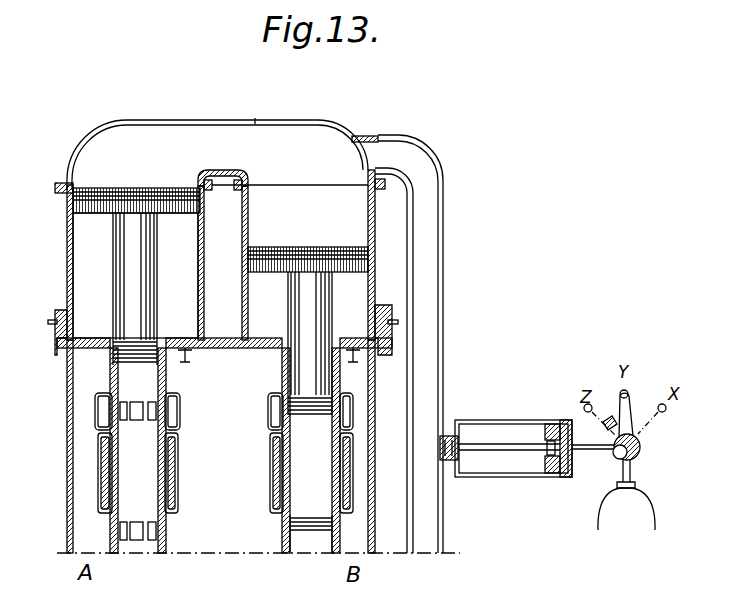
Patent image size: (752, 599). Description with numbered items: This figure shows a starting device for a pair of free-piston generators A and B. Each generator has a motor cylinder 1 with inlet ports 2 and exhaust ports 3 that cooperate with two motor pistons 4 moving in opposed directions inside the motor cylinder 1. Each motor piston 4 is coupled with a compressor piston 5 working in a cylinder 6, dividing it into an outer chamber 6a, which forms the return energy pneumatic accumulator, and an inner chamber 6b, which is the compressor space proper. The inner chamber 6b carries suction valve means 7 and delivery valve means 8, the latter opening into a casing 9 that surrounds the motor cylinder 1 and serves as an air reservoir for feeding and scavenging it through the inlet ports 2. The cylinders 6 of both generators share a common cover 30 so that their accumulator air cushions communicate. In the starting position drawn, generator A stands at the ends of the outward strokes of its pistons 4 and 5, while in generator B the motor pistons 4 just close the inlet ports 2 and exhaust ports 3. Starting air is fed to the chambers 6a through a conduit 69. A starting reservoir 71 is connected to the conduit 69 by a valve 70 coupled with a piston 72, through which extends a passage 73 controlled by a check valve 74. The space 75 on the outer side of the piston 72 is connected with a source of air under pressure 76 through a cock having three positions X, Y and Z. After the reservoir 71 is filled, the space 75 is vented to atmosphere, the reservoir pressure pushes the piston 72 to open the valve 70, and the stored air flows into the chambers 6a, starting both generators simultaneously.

The motor cylinder 1 is at (170, 477).
The inlet ports 2 is at (166, 529).
The exhaust ports 3 is at (165, 415).
The motor pistons 4 is at (122, 272).
The compressor piston 5 is at (84, 191).
The cylinder 6 is at (66, 235).
The outer chamber 6a is at (125, 188).
The inner chamber 6b is at (101, 291).
The suction valve means 7 is at (62, 323).
The delivery valve means 8 is at (185, 362).
The casing 9 is at (70, 404).
The common cover 30 is at (255, 118).
The conduit 69 is at (425, 318).
The valve 70 is at (463, 437).
The starting reservoir 71 is at (515, 430).
The piston 72 is at (572, 462).
The passage 73 is at (557, 473).
The check valve 74 is at (552, 450).
The space 75 is at (555, 428).
The source of air under pressure 76 is at (630, 503).